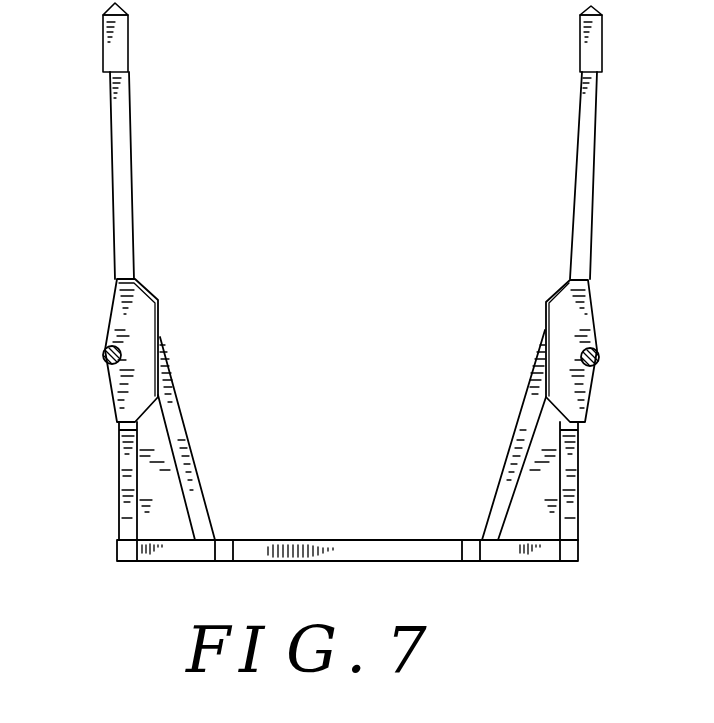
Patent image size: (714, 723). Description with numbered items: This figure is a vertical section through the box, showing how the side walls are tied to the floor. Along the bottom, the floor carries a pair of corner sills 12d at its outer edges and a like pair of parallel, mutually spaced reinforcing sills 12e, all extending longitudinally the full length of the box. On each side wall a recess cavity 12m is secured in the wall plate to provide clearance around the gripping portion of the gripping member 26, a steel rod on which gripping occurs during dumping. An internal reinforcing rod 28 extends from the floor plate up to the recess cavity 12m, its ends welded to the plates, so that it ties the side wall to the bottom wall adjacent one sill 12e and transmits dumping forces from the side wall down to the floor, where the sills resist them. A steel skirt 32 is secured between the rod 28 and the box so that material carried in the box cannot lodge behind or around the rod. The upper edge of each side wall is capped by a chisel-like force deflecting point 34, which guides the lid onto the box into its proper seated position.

The chisel-like force deflecting point 34 is at (118, 5).
The recess cavity 12m is at (138, 286).
The gripping member 26 is at (102, 355).
The internal reinforcing rod 28 is at (190, 432).
The steel skirt 32 is at (165, 487).
The corner sill 12d is at (116, 543).
The reinforcing sill 12e is at (224, 562).